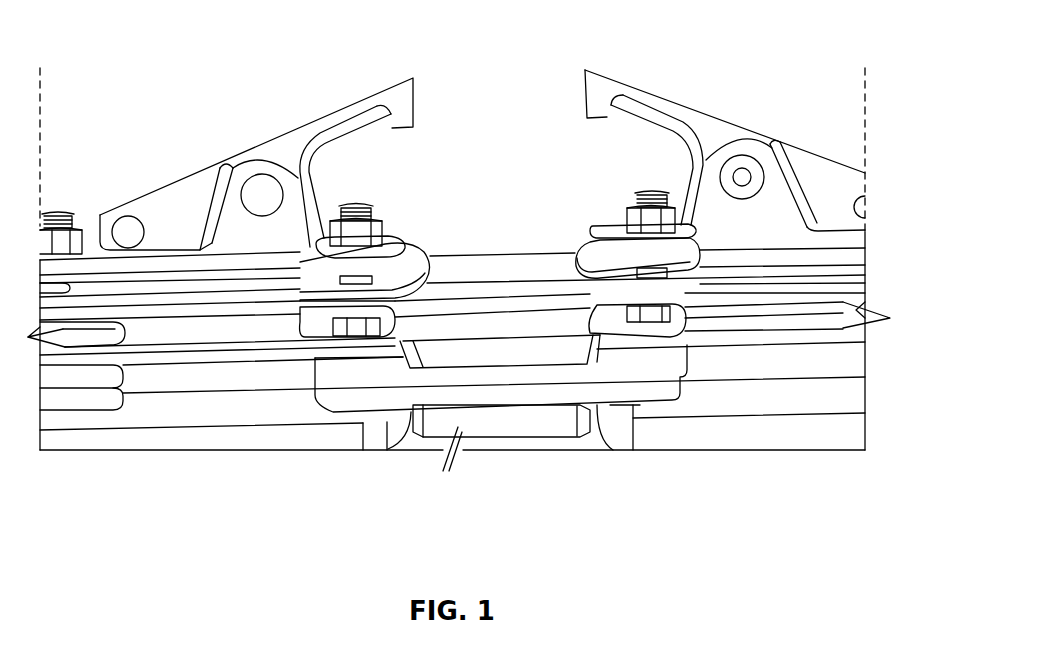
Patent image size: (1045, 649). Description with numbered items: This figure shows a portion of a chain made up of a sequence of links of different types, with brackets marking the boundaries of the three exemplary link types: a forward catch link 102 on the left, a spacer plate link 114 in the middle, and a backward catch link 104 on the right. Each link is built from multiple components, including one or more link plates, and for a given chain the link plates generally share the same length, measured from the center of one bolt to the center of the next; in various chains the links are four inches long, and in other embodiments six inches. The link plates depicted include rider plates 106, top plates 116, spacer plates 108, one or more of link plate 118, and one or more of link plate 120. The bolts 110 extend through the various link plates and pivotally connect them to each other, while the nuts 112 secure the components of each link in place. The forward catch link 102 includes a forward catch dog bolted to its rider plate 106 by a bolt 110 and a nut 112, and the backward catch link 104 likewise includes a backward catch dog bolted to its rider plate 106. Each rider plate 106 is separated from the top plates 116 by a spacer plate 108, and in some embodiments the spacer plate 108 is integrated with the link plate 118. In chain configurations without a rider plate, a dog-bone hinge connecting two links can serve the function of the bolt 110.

The forward catch link 102 is at (40, 68).
The backward catch link 104 is at (585, 68).
The rider plate 106 is at (428, 263).
The spacer plate 108 is at (506, 285).
The bolt 110 is at (356, 206).
The nut 112 is at (381, 225).
The spacer plate link 114 is at (688, 470).
The top plate 116 is at (813, 318).
The link plate 118 is at (520, 373).
The link plate 120 is at (205, 425).